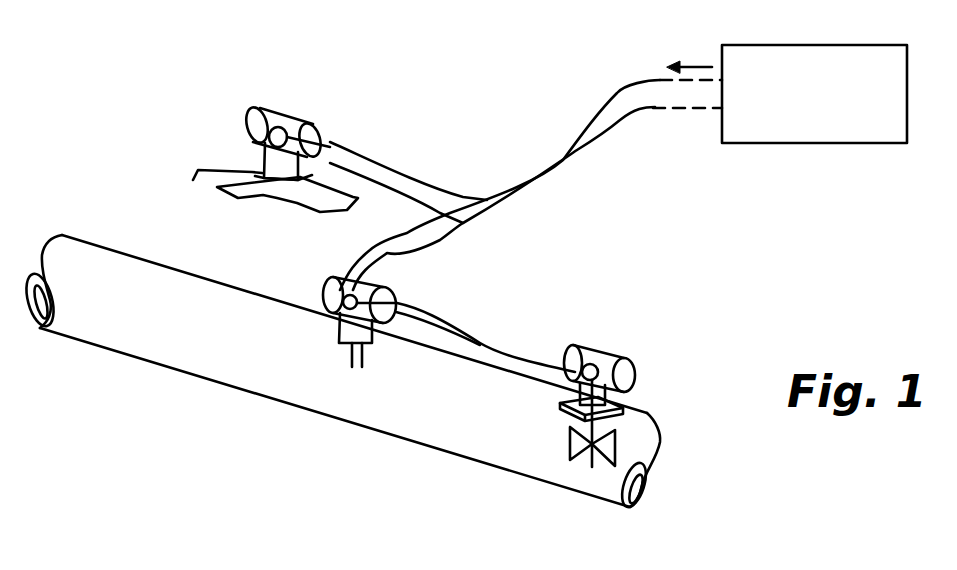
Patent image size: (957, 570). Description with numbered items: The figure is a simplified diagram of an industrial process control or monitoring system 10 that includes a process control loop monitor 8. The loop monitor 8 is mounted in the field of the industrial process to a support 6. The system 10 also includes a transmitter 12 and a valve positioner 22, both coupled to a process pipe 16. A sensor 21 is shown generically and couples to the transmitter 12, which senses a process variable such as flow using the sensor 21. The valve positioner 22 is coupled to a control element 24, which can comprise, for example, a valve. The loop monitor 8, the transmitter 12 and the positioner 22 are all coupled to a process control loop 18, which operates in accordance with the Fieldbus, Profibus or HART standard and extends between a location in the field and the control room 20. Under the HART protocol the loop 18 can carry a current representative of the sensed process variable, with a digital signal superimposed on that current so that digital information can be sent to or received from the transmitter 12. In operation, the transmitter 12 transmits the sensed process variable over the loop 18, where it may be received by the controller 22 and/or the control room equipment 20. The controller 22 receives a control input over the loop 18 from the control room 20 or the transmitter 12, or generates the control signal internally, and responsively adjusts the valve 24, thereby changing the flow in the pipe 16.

The process control system 10 is at (377, 119).
The support 6 is at (210, 170).
The process control loop monitor 8 is at (253, 117).
The transmitter 12 is at (340, 277).
The process pipe 16 is at (177, 368).
The process control loop 18 is at (410, 233).
The control room 20 is at (753, 143).
The sensor 21 is at (412, 375).
The valve positioner 22 is at (600, 358).
The control element 24 is at (518, 432).